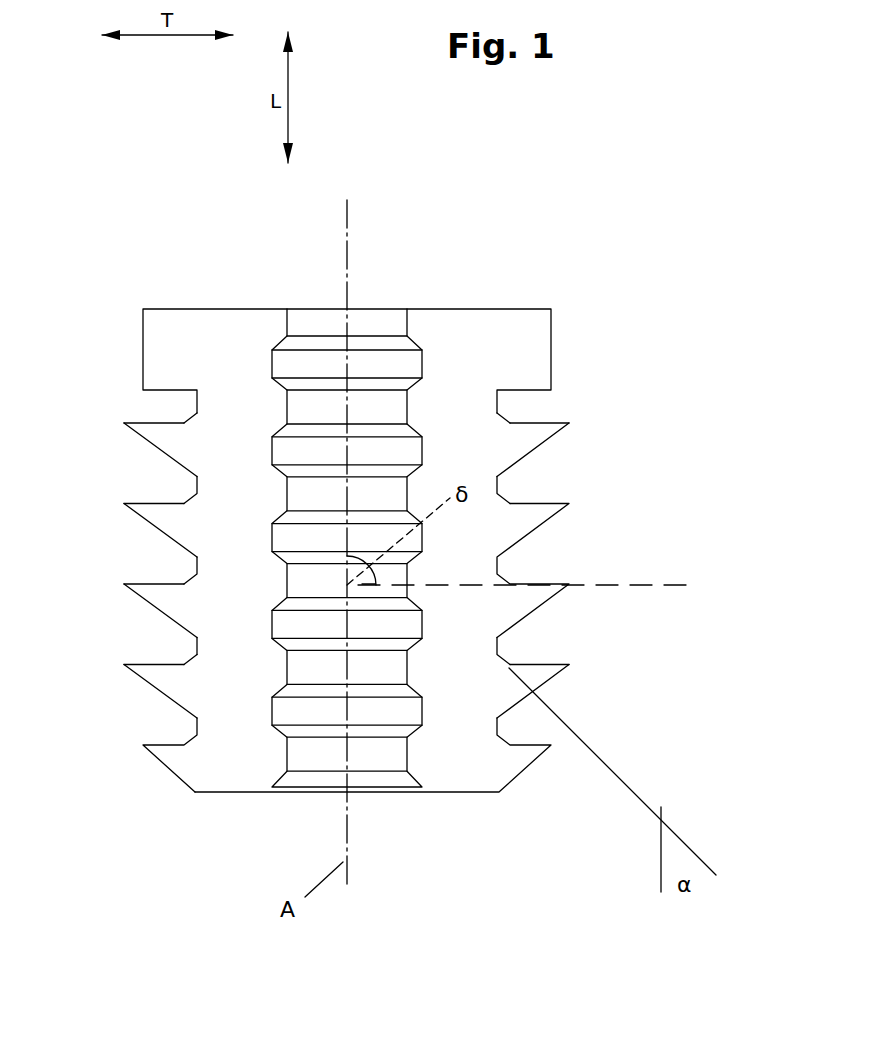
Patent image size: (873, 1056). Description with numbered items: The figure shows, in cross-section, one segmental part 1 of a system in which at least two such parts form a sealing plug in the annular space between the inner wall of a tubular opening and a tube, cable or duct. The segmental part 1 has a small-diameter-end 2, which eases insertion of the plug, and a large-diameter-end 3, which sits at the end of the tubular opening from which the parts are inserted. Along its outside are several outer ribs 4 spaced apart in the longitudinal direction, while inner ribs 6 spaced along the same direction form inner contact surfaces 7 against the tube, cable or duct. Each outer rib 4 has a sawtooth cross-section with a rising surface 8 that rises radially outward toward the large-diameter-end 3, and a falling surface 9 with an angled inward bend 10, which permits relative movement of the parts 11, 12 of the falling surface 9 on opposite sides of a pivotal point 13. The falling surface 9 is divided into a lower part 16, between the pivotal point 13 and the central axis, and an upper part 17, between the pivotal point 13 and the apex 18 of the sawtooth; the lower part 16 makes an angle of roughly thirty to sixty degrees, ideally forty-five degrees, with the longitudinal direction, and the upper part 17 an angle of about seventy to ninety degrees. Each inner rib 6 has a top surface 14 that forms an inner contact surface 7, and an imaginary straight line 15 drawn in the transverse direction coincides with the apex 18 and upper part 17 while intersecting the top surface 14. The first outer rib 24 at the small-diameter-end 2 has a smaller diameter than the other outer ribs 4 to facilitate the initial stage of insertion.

The segmental part 1 is at (461, 262).
The small-diameter-end 2 is at (485, 793).
The large-diameter-end 3 is at (496, 309).
The outer rib 4 is at (540, 438).
The inner rib 6 is at (280, 582).
The inner contact surface 7 is at (407, 668).
The rising surface 8 is at (146, 525).
The falling surface 9 is at (150, 501).
The angled inward bend 10 is at (180, 502).
The part of the falling surface 11 is at (142, 663).
The part of the falling surface 12 is at (186, 655).
The pivotal point 13 is at (185, 421).
The top surface 14 is at (407, 408).
The imaginary straight line 15 is at (534, 588).
The lower part of the falling surface 16 is at (503, 655).
The upper part of the falling surface 17 is at (548, 666).
The apex 18 is at (122, 421).
The first outer rib 24 is at (167, 757).